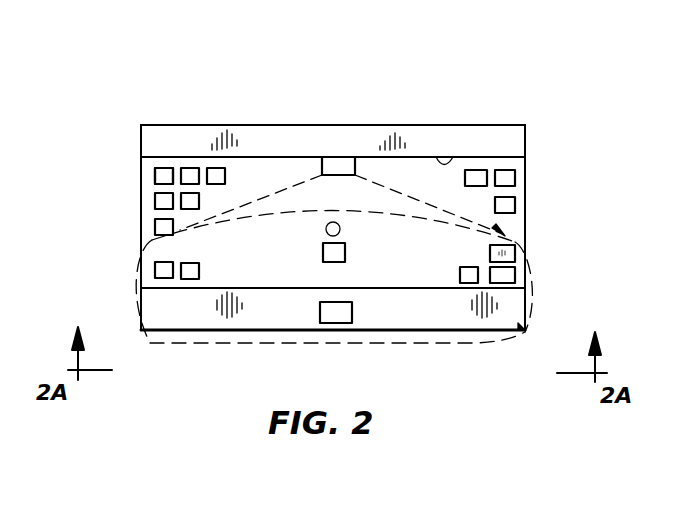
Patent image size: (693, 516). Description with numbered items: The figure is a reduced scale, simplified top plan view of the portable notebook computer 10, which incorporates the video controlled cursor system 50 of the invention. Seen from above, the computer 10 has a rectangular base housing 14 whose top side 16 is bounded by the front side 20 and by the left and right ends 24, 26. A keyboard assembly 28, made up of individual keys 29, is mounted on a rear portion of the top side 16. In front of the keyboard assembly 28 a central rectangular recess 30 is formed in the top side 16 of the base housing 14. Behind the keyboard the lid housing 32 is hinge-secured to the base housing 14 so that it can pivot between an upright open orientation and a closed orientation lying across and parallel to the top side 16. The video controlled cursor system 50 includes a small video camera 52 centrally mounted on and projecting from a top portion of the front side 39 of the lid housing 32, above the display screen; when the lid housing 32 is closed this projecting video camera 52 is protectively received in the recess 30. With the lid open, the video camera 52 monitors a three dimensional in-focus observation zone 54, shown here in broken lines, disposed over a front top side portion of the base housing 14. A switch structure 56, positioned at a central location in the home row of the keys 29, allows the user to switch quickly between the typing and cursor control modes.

The portable notebook computer 10 is at (575, 147).
The base housing 14 is at (528, 189).
The top side 16 is at (430, 305).
The front side 20 is at (275, 333).
The left end 24 is at (141, 200).
The right end 26 is at (528, 258).
The keyboard assembly 28 is at (212, 262).
The keys 29 is at (190, 167).
The central rectangular recess 30 is at (343, 303).
The lid housing 32 is at (428, 125).
The front side of lid housing 39 is at (450, 166).
The video controlled cursor system 50 is at (341, 107).
The video camera 52 is at (335, 166).
The observation zone 54 is at (136, 287).
The switch structure 56 is at (355, 232).